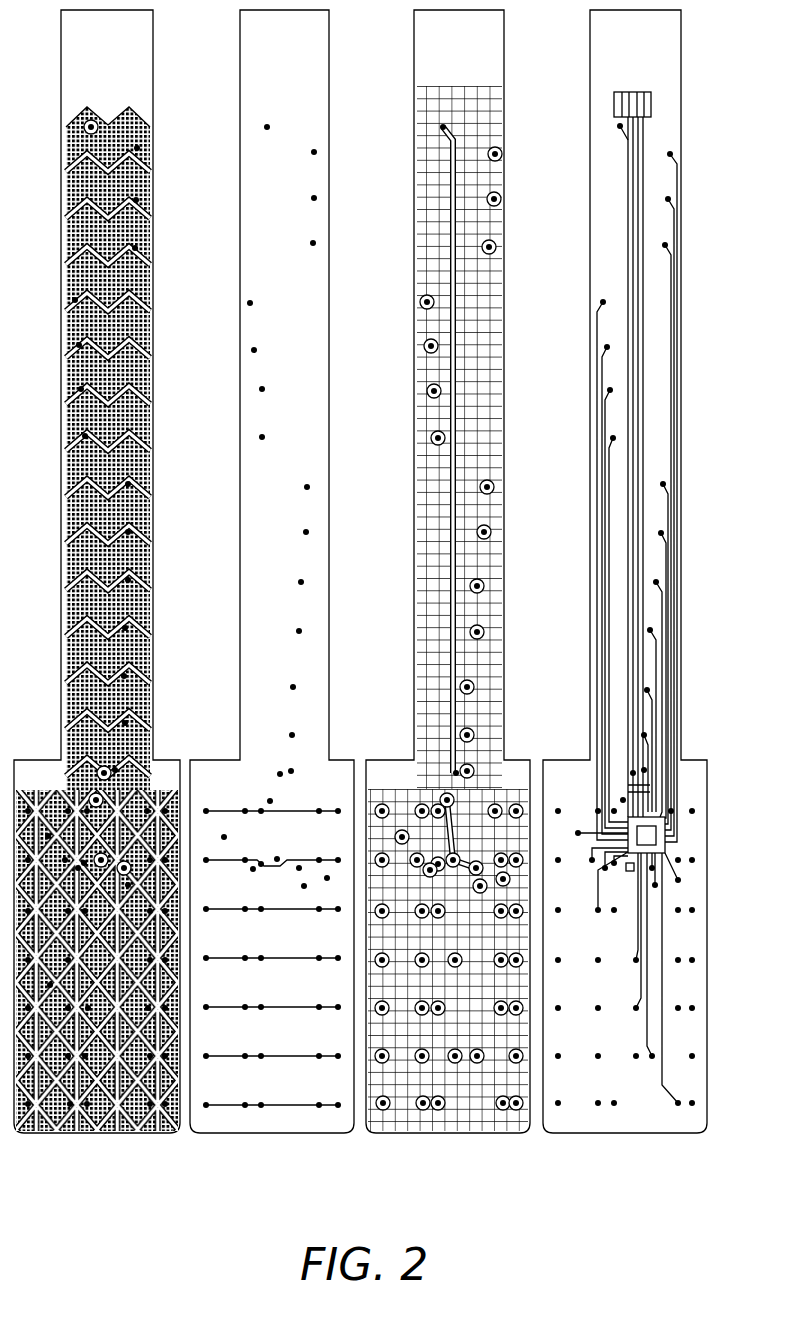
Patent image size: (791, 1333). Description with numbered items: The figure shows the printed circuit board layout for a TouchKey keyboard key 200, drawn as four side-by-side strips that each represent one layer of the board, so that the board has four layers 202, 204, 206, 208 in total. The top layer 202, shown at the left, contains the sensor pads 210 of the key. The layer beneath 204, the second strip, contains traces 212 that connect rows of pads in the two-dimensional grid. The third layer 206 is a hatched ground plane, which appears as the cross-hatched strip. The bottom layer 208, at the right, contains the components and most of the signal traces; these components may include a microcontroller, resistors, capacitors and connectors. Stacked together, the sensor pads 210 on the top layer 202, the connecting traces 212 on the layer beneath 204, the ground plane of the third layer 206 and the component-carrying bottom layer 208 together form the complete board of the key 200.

The key 200 is at (360, 616).
The top layer 202 is at (116, 600).
The layer beneath 204 is at (272, 600).
The third layer 206 is at (452, 1136).
The bottom layer 208 is at (628, 1136).
The sensor pads 210 is at (144, 330).
The traces 212 is at (305, 811).